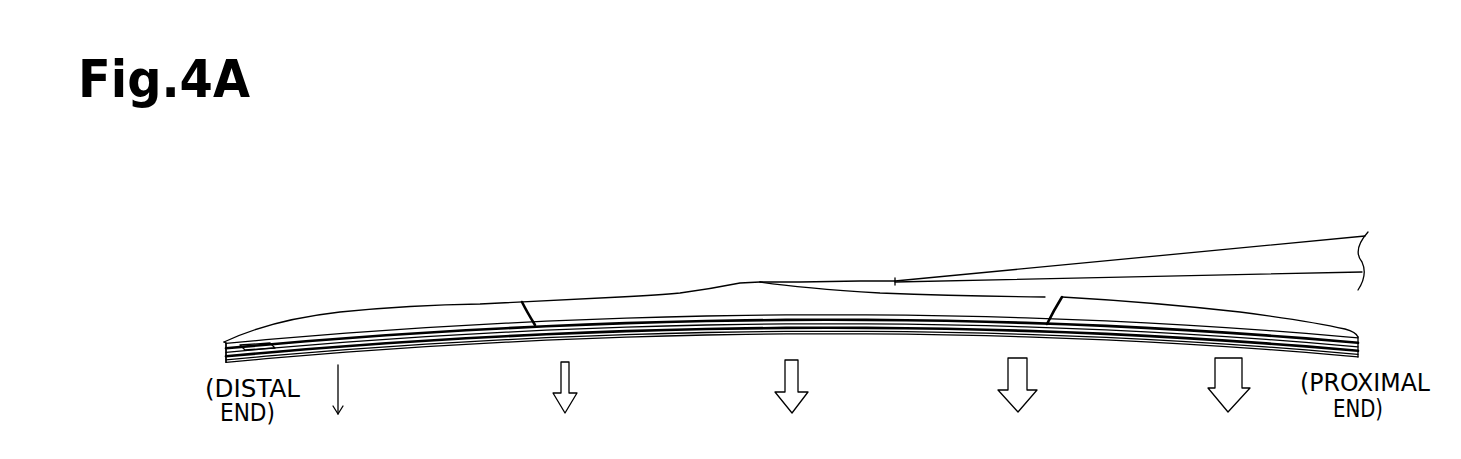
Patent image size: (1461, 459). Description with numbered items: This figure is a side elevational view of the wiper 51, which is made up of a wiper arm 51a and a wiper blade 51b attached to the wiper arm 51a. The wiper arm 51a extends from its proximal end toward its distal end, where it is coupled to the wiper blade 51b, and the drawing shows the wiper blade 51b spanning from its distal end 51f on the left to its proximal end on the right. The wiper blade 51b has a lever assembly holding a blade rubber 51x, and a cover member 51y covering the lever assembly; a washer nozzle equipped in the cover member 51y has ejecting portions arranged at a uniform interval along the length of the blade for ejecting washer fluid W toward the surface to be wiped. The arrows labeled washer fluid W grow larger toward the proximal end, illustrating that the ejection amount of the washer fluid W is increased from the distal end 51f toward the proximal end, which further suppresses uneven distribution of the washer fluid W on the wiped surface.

The wiper 51 is at (626, 216).
The wiper arm 51a is at (1265, 246).
The wiper blade 51b is at (438, 306).
The distal end 51f is at (224, 342).
The blade rubber 51x is at (449, 348).
The cover member 51y is at (553, 302).
The washer fluid W is at (340, 372).